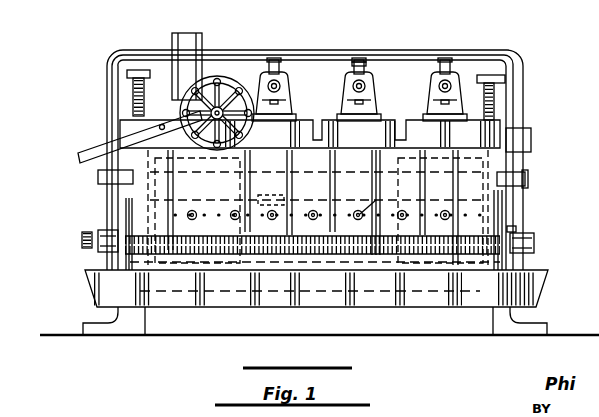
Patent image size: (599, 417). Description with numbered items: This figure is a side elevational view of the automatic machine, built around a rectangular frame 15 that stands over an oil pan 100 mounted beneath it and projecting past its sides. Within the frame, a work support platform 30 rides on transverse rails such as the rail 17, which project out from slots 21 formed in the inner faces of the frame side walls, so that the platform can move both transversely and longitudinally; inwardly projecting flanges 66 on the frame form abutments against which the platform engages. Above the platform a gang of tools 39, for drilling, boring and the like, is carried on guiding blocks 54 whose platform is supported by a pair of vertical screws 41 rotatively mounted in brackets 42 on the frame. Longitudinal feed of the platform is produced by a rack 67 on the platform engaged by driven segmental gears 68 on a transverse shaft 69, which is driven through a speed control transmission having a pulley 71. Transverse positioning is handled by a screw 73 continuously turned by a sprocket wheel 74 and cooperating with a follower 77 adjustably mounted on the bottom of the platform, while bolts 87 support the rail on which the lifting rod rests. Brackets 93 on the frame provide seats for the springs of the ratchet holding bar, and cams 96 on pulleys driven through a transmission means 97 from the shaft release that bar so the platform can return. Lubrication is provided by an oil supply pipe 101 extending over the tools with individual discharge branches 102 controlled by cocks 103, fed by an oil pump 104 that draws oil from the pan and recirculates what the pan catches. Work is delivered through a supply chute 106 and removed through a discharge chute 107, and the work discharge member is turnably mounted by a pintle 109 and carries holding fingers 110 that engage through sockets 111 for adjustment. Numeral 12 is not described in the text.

The lubricator cylinder 12 is at (444, 70).
The rectangular frame 15 is at (524, 203).
The rail 17 is at (338, 172).
The slot 21 is at (134, 88).
The work support platform 30 is at (237, 168).
The tool 39 is at (433, 84).
The vertical screw 41 is at (494, 105).
The bracket 42 is at (130, 74).
The guiding block 54 is at (279, 107).
The inwardly projecting flange 66 is at (162, 124).
The rack 67 is at (183, 208).
The segmental gear 68 is at (332, 203).
The shaft 69 is at (297, 252).
The pulley 71 is at (88, 250).
The screw 73 is at (402, 230).
The sprocket wheel 74 is at (514, 230).
The follower 77 is at (284, 198).
The bolt 87 is at (360, 214).
The bracket 93 is at (525, 179).
The cam 96 is at (534, 243).
The transmission means 97 is at (97, 230).
The oil pan 100 is at (549, 288).
The oil supply pipe 101 is at (338, 53).
The discharge branch 102 is at (276, 60).
The cock 103 is at (366, 62).
The oil pump 104 is at (531, 140).
The supply chute 106 is at (183, 33).
The discharge chute 107 is at (93, 148).
The pintle 109 is at (220, 106).
The holding finger 110 is at (222, 84).
The socket 111 is at (206, 80).